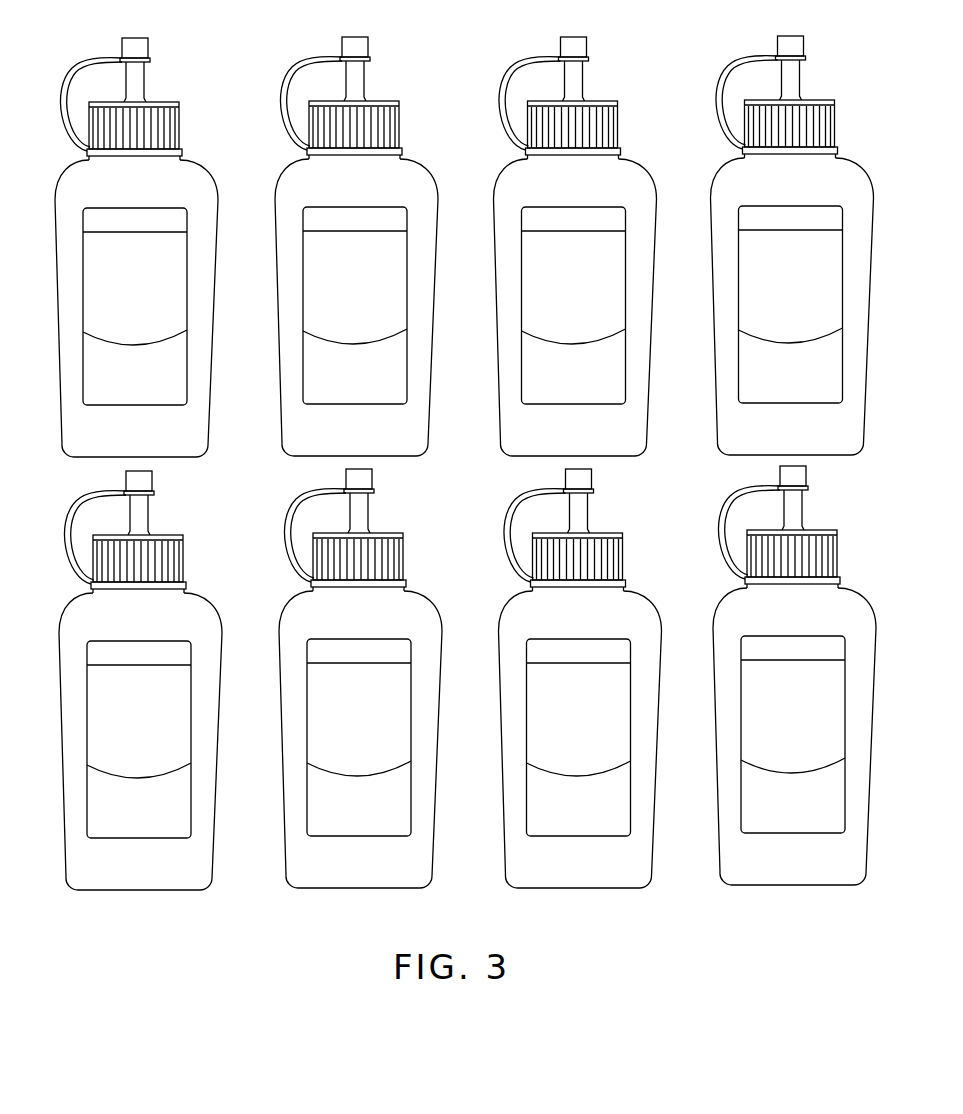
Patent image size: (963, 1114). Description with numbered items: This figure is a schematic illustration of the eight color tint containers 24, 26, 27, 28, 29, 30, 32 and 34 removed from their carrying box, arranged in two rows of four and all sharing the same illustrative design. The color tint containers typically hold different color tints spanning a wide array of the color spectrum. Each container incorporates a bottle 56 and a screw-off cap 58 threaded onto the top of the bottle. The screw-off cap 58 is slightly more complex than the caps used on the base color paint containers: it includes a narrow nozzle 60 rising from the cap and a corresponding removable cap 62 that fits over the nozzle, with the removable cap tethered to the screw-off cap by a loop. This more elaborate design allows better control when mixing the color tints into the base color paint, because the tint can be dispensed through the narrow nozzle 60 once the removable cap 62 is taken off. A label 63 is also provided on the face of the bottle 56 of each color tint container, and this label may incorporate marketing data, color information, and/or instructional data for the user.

The color tint container 24 is at (141, 228).
The color tint container 26 is at (412, 160).
The color tint container 27 is at (628, 157).
The color tint container 28 is at (843, 155).
The color tint container 29 is at (208, 597).
The color tint container 30 is at (424, 595).
The color tint container 32 is at (653, 590).
The color tint container 34 is at (846, 587).
The bottle 56 is at (210, 357).
The screw-off cap 58 is at (179, 124).
The narrow nozzle 60 is at (146, 88).
The removable cap 62 is at (149, 48).
The label 63 is at (83, 303).